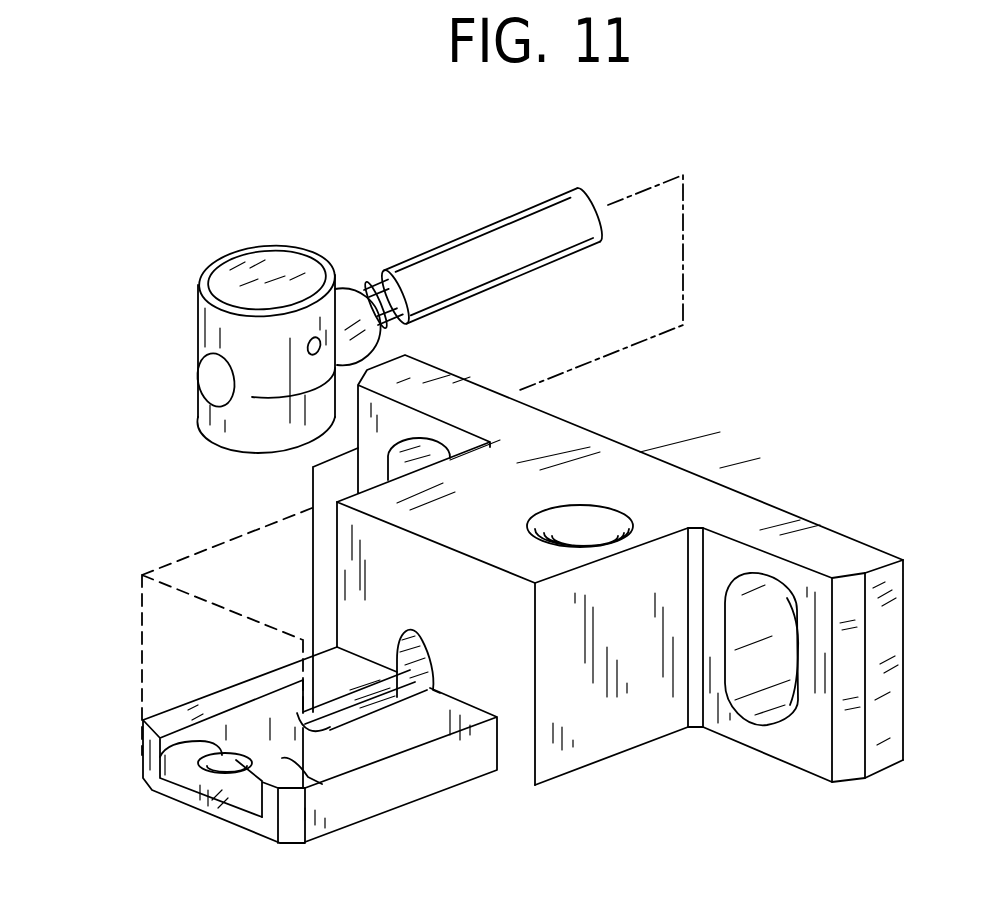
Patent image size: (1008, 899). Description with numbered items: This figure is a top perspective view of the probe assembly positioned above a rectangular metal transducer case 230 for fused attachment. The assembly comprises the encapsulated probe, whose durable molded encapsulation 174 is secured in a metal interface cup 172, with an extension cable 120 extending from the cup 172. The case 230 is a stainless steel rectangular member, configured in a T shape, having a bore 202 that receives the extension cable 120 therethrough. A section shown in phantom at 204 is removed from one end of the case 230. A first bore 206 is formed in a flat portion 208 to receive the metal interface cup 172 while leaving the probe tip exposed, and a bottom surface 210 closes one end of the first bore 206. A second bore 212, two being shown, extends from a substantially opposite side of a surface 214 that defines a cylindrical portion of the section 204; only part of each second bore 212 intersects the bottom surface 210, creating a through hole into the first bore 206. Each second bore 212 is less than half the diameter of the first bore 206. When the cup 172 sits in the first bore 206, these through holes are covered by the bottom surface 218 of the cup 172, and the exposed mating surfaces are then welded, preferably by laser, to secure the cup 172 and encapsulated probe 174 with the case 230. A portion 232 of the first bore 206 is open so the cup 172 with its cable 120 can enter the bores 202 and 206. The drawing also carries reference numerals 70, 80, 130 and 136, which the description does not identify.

The clamp assembly 70 is at (391, 299).
The collar 80 is at (363, 292).
The extension cable 120 is at (489, 220).
The neck 130 is at (410, 325).
The handle end 136 is at (559, 195).
The metal interface cup 172 is at (230, 440).
The encapsulation 174 is at (198, 301).
The bore 202 is at (471, 619).
The section (in phantom) 204 is at (137, 558).
The first bore 206 is at (306, 787).
The flat portion 208 is at (393, 733).
The bottom surface 210 is at (163, 790).
The second bore 212 is at (188, 760).
The surface 214 is at (425, 541).
The bottom surface 218 is at (263, 462).
The rectangular metal transducer case 230 is at (858, 560).
The portion 232 is at (277, 757).